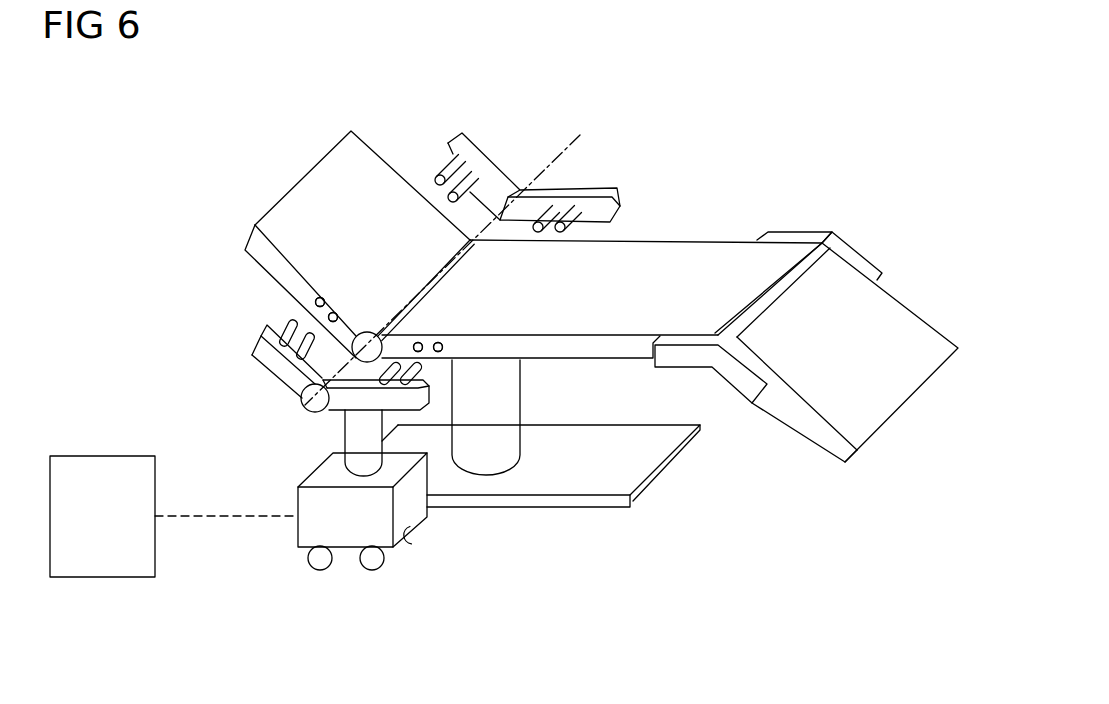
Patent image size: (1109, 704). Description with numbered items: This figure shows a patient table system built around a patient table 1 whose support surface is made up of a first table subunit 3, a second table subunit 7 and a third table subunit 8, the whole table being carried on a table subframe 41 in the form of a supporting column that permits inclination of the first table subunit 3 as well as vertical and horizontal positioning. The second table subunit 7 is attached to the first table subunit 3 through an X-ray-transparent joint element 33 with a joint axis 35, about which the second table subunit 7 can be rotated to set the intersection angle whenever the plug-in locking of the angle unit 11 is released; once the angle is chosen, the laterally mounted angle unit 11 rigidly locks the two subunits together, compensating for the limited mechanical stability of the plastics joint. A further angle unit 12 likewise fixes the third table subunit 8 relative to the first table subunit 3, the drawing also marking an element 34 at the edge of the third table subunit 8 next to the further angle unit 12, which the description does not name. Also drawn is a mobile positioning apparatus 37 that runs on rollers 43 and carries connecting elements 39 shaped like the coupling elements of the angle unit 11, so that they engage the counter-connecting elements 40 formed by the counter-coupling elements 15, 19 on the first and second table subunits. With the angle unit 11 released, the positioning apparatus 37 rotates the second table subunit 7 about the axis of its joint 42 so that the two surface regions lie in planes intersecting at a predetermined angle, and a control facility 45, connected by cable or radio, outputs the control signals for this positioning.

The patient table 1 is at (817, 110).
The first table subunit 3 is at (688, 238).
The second table subunit 7 is at (317, 163).
The third table subunit 8 is at (913, 398).
The angle unit 11 is at (481, 148).
The further angle unit 12 is at (853, 233).
The first counter-coupling element 15 is at (455, 344).
The second counter-coupling element 19 is at (307, 288).
The joint element 33 is at (428, 272).
The hinge edge strip of second panel 34 is at (792, 268).
The joint axis 35 is at (575, 135).
The positioning apparatus 37 is at (292, 472).
The connecting elements 39 is at (278, 320).
The counter-connecting elements 40 is at (379, 325).
The table subframe 41 is at (521, 398).
The joint 42 is at (302, 398).
The rollers 43 is at (321, 571).
The control facility 45 is at (103, 579).